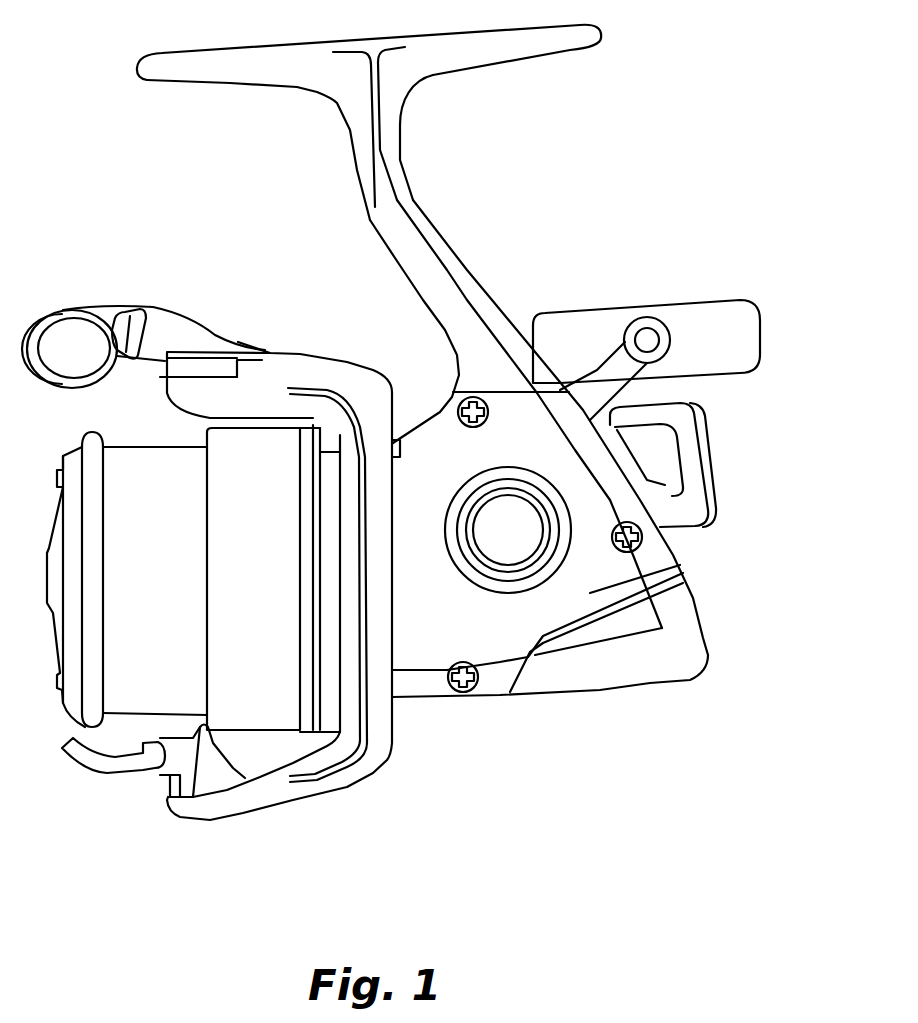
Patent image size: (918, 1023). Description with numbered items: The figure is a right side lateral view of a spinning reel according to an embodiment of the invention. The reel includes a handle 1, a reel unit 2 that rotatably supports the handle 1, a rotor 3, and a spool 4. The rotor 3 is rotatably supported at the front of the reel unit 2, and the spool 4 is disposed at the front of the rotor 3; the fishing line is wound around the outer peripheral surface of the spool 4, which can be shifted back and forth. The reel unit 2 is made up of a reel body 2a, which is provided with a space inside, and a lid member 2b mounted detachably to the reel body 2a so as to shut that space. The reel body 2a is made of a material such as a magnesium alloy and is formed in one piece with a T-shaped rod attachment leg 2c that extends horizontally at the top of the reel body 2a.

The handle 1 is at (623, 310).
The reel unit 2 is at (644, 559).
The reel body 2a is at (488, 378).
The lid member 2b is at (680, 565).
The T-shaped rod attachment leg 2c is at (508, 50).
The rotor 3 is at (376, 757).
The spool 4 is at (127, 697).